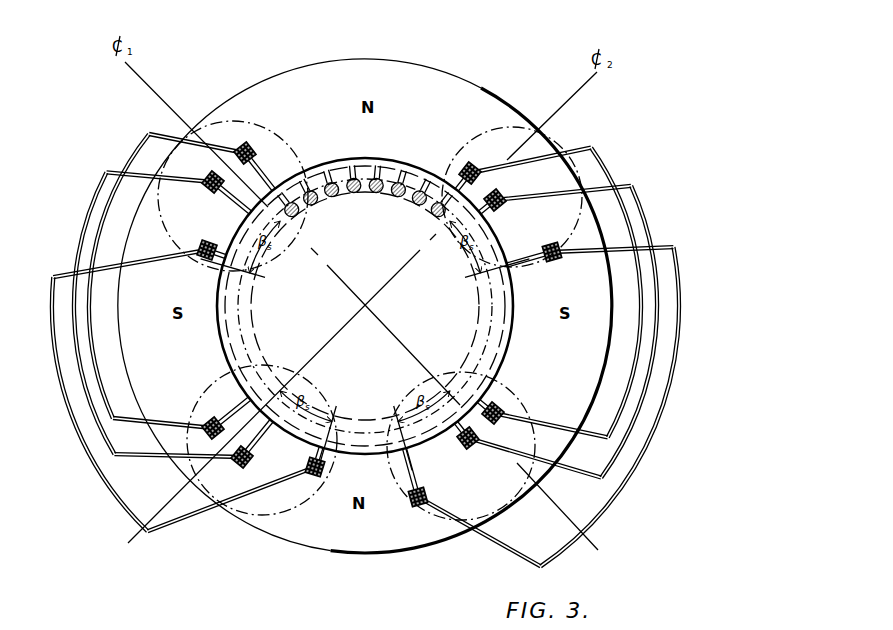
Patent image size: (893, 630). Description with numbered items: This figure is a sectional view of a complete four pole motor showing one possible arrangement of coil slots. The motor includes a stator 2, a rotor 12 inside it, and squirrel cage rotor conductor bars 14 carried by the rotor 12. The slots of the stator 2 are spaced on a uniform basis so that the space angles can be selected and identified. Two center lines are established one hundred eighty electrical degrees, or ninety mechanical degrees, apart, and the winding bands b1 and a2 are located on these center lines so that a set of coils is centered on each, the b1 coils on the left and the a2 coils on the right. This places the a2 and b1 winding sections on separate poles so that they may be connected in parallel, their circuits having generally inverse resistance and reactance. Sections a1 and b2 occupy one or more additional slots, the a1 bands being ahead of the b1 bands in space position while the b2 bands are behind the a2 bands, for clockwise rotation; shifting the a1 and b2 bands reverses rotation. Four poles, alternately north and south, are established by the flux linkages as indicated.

The stator 2 is at (490, 100).
The rotor 12 is at (315, 176).
The squirrel cage rotor conductor bars 14 is at (376, 193).
The a1 winding sections a1 is at (187, 386).
The b1 winding bands b1 is at (173, 299).
The a2 winding bands a2 is at (557, 312).
The b2 winding sections b2 is at (542, 401).